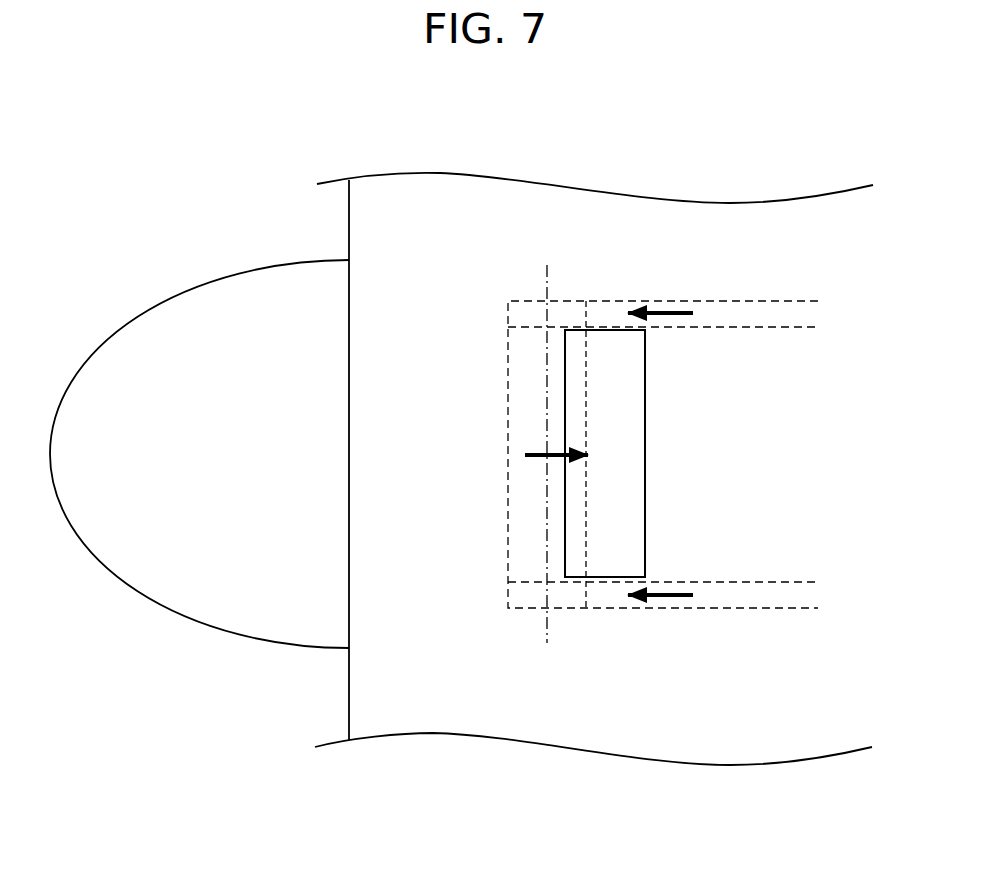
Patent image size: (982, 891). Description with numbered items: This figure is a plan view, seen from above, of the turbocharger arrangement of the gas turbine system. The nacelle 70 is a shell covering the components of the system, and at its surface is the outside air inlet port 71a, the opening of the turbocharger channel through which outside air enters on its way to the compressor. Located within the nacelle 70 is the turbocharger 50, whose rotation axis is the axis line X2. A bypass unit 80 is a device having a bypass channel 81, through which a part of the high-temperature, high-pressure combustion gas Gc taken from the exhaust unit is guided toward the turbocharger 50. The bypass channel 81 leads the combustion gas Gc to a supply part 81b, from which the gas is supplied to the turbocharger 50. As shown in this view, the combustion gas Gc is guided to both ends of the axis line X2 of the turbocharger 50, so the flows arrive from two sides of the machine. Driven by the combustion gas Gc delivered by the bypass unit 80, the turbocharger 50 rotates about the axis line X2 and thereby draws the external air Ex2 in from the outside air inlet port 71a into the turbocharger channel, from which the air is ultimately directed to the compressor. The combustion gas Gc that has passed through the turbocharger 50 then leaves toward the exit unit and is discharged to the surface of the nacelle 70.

The nacelle 70 is at (349, 213).
The outside air inlet port 71a is at (650, 436).
The turbocharger 50 is at (504, 492).
The bypass channel 81 is at (790, 297).
The supply part 81b is at (596, 302).
The bypass unit 80 is at (725, 291).
The combustion gas Gc is at (663, 311).
The external air Ex2 is at (540, 453).
The axis line X2 is at (547, 630).